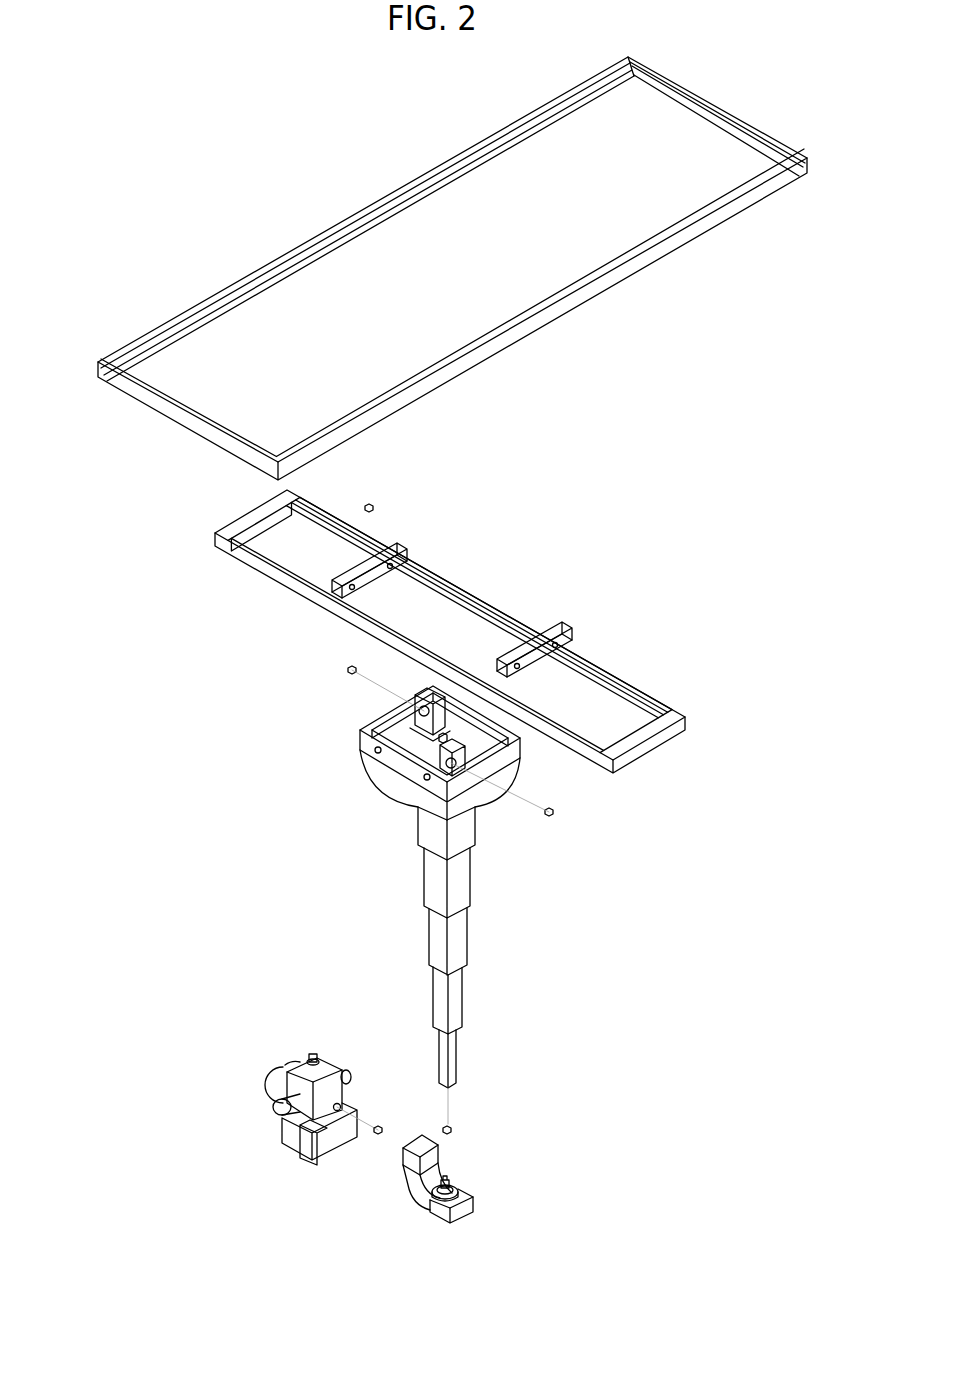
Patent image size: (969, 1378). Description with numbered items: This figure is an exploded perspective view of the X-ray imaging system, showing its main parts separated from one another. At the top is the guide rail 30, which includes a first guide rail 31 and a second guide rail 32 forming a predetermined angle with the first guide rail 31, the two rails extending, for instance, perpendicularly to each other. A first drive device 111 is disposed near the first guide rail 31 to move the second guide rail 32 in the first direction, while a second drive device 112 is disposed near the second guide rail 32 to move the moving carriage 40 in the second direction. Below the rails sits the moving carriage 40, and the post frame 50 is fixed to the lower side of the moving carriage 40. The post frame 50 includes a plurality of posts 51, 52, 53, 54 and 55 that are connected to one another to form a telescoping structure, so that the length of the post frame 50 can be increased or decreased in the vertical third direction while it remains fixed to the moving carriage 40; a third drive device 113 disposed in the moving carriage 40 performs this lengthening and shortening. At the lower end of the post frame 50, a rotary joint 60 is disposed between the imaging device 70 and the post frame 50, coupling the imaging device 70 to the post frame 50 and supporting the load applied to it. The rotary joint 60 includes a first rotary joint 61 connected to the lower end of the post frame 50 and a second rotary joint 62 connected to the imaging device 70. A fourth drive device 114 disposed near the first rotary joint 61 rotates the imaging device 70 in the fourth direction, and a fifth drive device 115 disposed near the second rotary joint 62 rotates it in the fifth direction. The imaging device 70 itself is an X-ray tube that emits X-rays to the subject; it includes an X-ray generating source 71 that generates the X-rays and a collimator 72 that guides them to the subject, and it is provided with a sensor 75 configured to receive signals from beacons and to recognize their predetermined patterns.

The guide rail 30 is at (167, 447).
The first guide rail 31 is at (228, 447).
The second guide rail 32 is at (225, 520).
The first drive device 111 is at (395, 550).
The second drive device 112 is at (417, 703).
The third drive device 113 is at (463, 742).
The moving carriage 40 is at (383, 777).
The post frame 50 is at (547, 835).
The post 51 is at (468, 836).
The post 52 is at (465, 891).
The post 53 is at (462, 945).
The post 54 is at (457, 1002).
The post 55 is at (452, 1057).
The rotary joint 60 is at (483, 1200).
The first rotary joint 61 is at (420, 1142).
The second rotary joint 62 is at (468, 1212).
The fifth drive device 115 is at (450, 1185).
The imaging device 70 is at (301, 1050).
The X-ray generating source 71 is at (283, 1115).
The collimator 72 is at (293, 1133).
The sensor 75 is at (307, 1155).
The fourth drive device 114 is at (337, 1113).